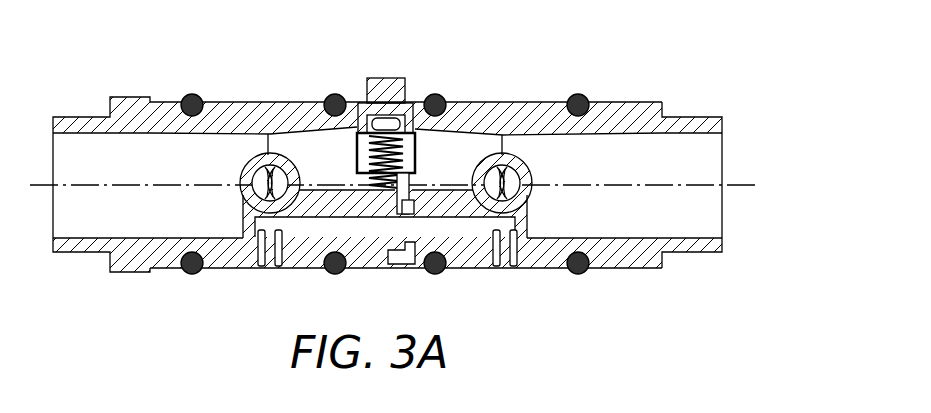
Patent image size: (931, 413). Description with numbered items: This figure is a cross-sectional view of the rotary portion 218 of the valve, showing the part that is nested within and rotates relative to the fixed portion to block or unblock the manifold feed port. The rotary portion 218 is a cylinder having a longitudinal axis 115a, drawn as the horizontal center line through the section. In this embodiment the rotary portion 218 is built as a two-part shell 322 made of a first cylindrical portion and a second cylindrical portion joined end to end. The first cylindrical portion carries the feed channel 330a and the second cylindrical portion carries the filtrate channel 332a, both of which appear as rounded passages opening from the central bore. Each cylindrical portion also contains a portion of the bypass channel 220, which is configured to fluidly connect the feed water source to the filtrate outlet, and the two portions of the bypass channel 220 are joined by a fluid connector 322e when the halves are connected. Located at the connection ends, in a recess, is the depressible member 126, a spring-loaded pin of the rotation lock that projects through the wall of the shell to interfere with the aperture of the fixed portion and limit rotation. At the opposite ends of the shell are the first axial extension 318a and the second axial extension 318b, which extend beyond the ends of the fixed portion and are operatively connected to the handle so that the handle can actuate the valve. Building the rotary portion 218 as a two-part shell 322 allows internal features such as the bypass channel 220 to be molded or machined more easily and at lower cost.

The longitudinal axis 115a is at (726, 185).
The depressible member 126 is at (393, 78).
The rotary portion 218 is at (522, 63).
The two-part shell 322 is at (406, 153).
The first axial extension 318a is at (74, 117).
The second axial extension 318b is at (690, 117).
The feed channel 330a is at (245, 171).
The filtrate channel 332a is at (529, 179).
The bypass channel 220 is at (313, 228).
The fluid connector 322e is at (398, 258).